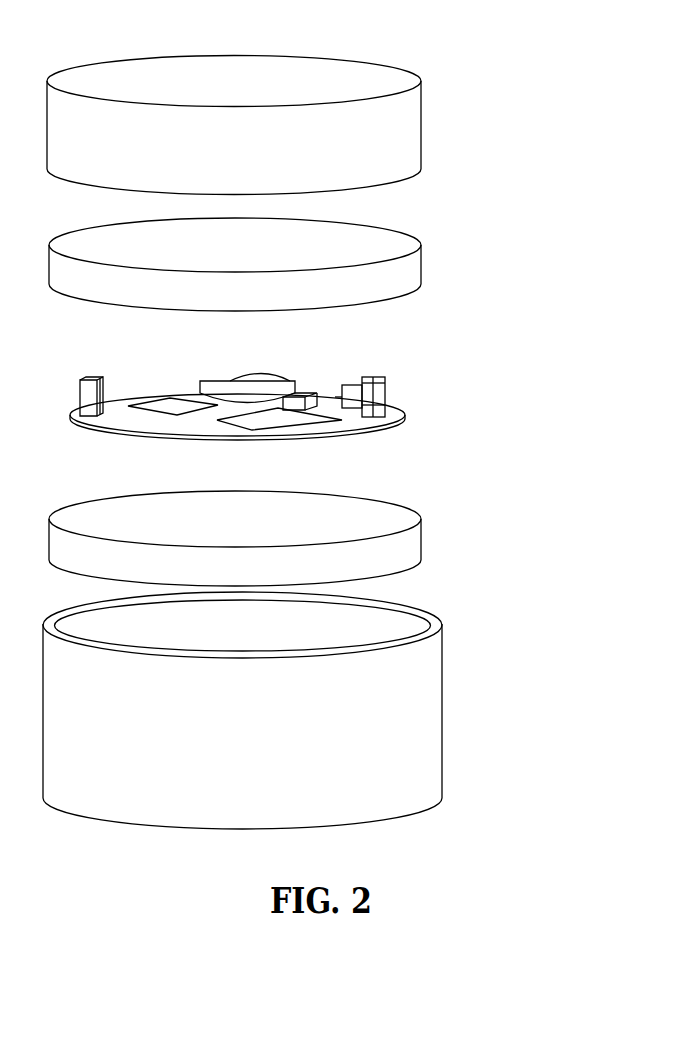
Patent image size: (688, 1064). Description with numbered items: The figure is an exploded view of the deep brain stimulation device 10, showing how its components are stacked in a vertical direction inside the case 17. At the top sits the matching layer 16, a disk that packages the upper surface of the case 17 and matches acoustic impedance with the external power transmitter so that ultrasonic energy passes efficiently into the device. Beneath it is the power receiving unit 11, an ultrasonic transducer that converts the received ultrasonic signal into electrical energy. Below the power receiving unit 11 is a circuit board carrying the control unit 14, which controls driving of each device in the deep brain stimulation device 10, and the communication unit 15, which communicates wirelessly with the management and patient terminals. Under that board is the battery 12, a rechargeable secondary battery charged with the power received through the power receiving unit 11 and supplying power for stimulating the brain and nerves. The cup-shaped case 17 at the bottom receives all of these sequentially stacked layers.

The deep brain stimulation device 10 is at (599, 31).
The power receiving unit 11 is at (421, 262).
The battery 12 is at (421, 540).
The control unit 14 is at (405, 417).
The communication unit 15 is at (232, 402).
The matching layer 16 is at (421, 123).
The case 17 is at (442, 720).